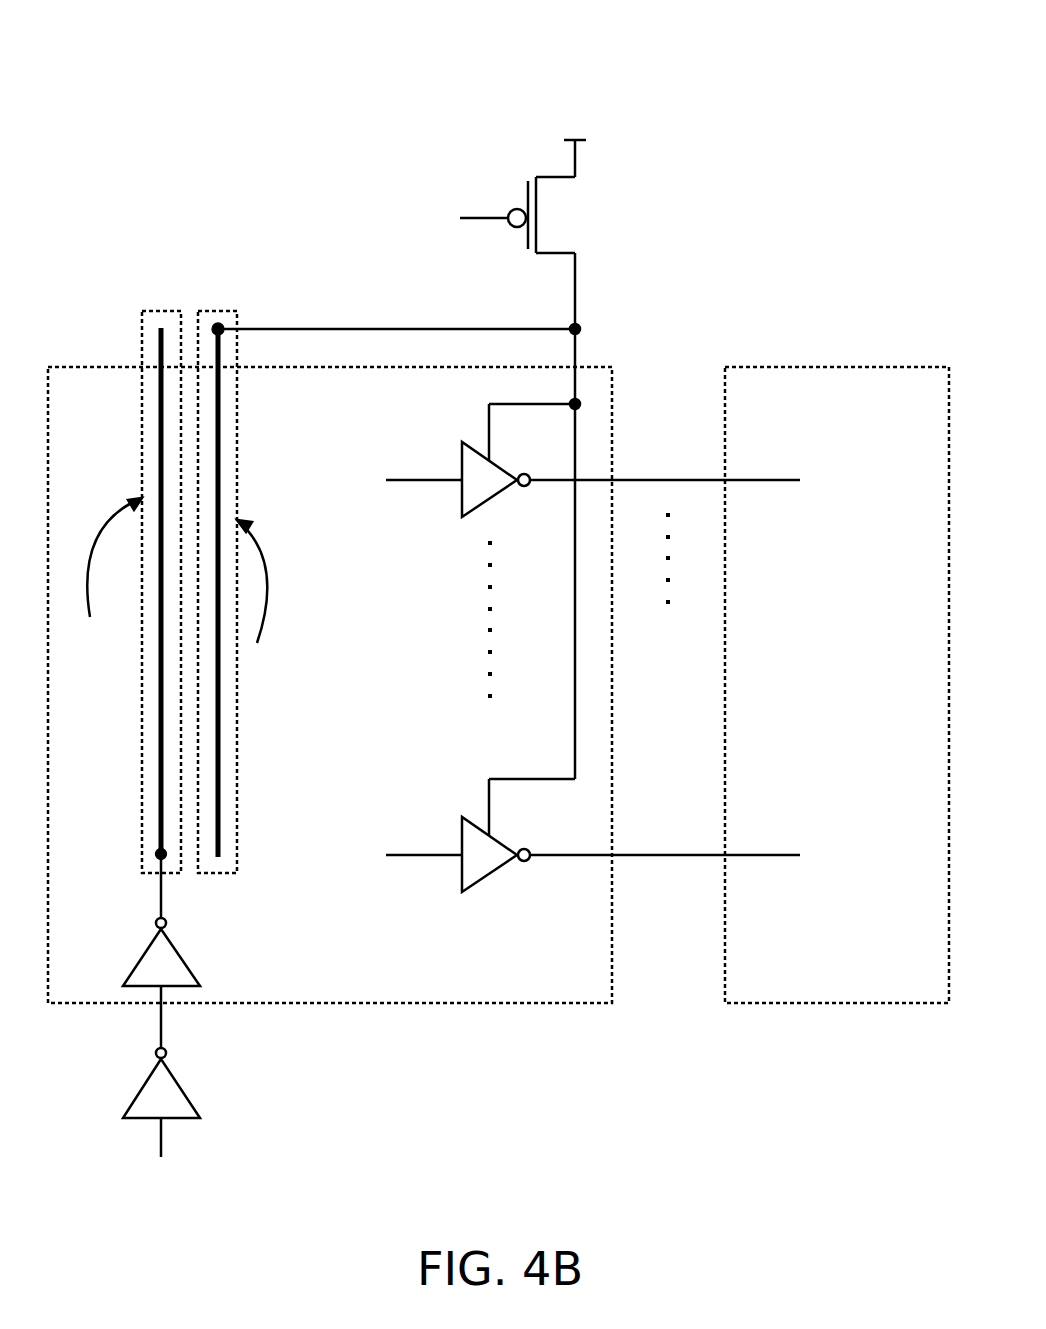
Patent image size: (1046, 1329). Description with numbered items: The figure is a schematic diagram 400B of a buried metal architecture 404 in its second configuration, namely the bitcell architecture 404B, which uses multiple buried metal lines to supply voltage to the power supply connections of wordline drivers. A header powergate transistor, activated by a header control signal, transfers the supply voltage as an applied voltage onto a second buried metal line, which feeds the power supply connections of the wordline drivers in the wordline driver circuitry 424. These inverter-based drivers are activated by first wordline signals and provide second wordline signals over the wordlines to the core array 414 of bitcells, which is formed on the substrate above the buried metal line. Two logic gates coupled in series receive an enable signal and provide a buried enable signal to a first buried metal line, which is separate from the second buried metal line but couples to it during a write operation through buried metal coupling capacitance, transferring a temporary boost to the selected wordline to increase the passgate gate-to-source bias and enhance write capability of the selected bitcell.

The schematic diagram 400B is at (111, 20).
The buried metal architecture 404 is at (663, 48).
The buried metal architecture 404B is at (373, 450).
The wordline driver circuitry 424 is at (552, 986).
The core array 414 is at (907, 986).